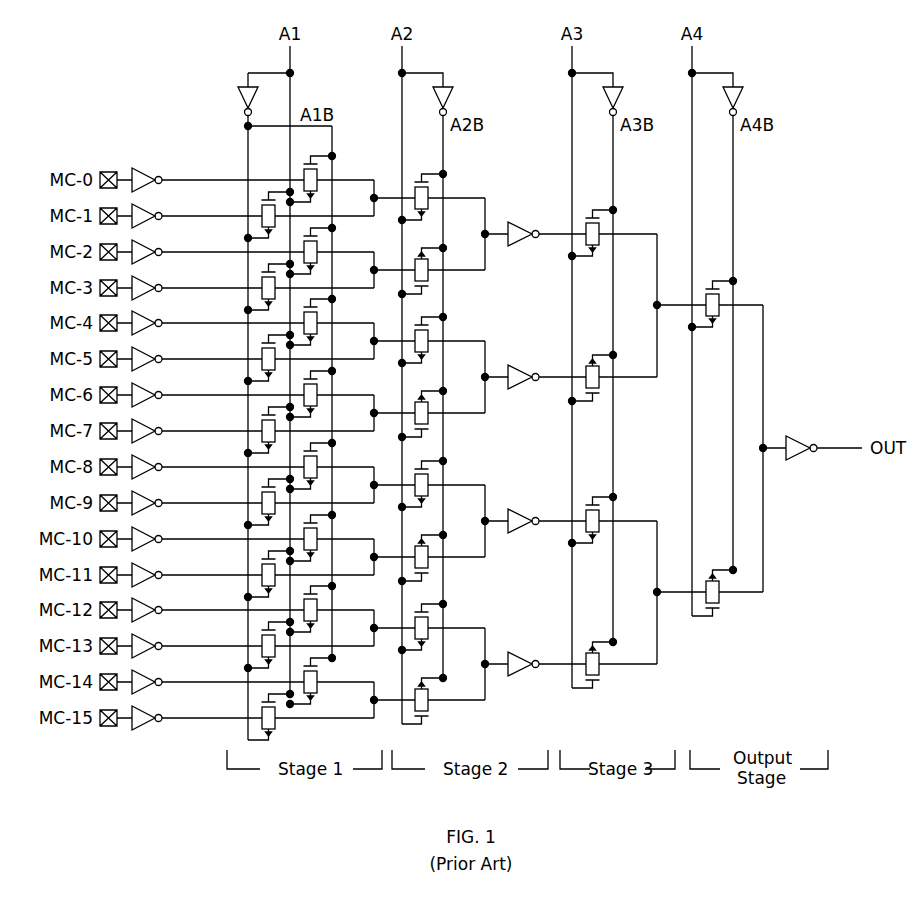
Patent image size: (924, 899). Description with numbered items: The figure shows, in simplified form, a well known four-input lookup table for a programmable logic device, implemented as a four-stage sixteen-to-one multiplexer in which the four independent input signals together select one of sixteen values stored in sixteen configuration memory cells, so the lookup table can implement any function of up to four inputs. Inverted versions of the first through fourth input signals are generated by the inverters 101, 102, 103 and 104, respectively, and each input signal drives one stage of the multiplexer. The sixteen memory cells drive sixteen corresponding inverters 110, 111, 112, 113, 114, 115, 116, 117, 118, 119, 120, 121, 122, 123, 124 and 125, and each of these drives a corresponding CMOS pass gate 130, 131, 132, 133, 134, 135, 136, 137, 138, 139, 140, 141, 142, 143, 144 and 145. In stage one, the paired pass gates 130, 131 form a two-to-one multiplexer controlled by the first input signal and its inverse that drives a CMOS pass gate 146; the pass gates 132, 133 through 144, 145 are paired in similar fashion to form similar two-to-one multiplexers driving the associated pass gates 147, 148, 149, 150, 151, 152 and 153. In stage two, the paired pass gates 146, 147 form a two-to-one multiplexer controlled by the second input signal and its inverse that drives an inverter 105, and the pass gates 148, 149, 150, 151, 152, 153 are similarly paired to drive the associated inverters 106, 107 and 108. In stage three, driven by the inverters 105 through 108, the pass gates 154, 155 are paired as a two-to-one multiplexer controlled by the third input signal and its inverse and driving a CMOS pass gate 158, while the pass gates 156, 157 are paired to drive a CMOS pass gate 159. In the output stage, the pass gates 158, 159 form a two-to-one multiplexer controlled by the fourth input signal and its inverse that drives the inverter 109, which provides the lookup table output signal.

The inverter 101 is at (238, 100).
The inverter 102 is at (453, 98).
The inverter 103 is at (623, 98).
The inverter 104 is at (743, 98).
The inverter 105 is at (521, 247).
The inverter 106 is at (521, 390).
The inverter 107 is at (521, 534).
The inverter 108 is at (521, 677).
The inverter 109 is at (798, 461).
The inverter 110 is at (146, 171).
The inverter 111 is at (146, 207).
The inverter 112 is at (146, 243).
The inverter 113 is at (146, 279).
The inverter 114 is at (146, 314).
The inverter 115 is at (146, 350).
The inverter 116 is at (146, 386).
The inverter 117 is at (146, 422).
The inverter 118 is at (146, 458).
The inverter 119 is at (146, 494).
The inverter 120 is at (146, 530).
The inverter 121 is at (146, 566).
The inverter 122 is at (146, 601).
The inverter 123 is at (146, 637).
The inverter 124 is at (146, 673).
The inverter 125 is at (146, 709).
The CMOS pass gate 130 is at (317, 172).
The CMOS pass gate 131 is at (262, 213).
The CMOS pass gate 132 is at (317, 244).
The CMOS pass gate 133 is at (262, 285).
The CMOS pass gate 134 is at (317, 315).
The CMOS pass gate 135 is at (262, 356).
The CMOS pass gate 136 is at (317, 387).
The CMOS pass gate 137 is at (262, 428).
The CMOS pass gate 138 is at (317, 459).
The CMOS pass gate 139 is at (262, 500).
The CMOS pass gate 140 is at (317, 531).
The CMOS pass gate 141 is at (262, 572).
The CMOS pass gate 142 is at (317, 602).
The CMOS pass gate 143 is at (262, 643).
The CMOS pass gate 144 is at (317, 674).
The CMOS pass gate 145 is at (262, 715).
The CMOS pass gate 146 is at (428, 190).
The CMOS pass gate 147 is at (428, 278).
The CMOS pass gate 148 is at (428, 333).
The CMOS pass gate 149 is at (428, 421).
The CMOS pass gate 150 is at (428, 477).
The CMOS pass gate 151 is at (428, 565).
The CMOS pass gate 152 is at (428, 620).
The CMOS pass gate 153 is at (428, 708).
The pass gate 154 is at (599, 226).
The pass gate 155 is at (599, 385).
The pass gate 156 is at (599, 513).
The pass gate 157 is at (599, 672).
The CMOS pass gate 158 is at (719, 297).
The CMOS pass gate 159 is at (719, 600).